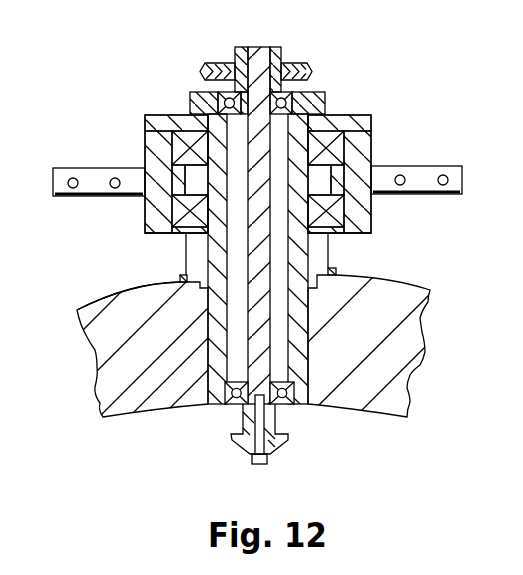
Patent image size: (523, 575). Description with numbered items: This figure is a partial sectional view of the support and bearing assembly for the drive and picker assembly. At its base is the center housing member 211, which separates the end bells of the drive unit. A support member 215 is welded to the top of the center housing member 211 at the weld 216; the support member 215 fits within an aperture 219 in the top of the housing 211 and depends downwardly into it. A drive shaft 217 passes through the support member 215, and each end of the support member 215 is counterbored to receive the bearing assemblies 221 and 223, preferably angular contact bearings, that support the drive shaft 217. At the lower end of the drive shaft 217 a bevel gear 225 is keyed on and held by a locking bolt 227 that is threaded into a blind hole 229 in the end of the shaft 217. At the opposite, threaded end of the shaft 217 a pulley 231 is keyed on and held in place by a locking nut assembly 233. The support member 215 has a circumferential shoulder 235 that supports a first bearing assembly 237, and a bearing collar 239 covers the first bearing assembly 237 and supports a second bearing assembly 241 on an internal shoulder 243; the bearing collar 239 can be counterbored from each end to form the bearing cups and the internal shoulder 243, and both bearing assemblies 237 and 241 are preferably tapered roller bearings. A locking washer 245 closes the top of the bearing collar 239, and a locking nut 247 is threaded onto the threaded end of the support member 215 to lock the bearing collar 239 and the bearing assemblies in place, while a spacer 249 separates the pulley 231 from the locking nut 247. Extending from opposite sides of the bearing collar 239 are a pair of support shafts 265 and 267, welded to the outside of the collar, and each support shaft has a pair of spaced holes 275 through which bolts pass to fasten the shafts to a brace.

The center housing member 211 is at (407, 283).
The support member 215 is at (301, 322).
The weld 216 is at (179, 277).
The drive shaft 217 is at (260, 318).
The aperture 219 is at (155, 302).
The bearing assembly 221 is at (293, 406).
The bearing assembly 223 is at (326, 108).
The bevel gear 225 is at (283, 441).
The locking bolt 227 is at (261, 465).
The blind hole 229 is at (247, 409).
The pulley 231 is at (314, 71).
The locking nut assembly 233 is at (281, 55).
The circumferential shoulder 235 is at (329, 236).
The first bearing assembly 237 is at (340, 219).
The bearing collar 239 is at (153, 229).
The second bearing assembly 241 is at (340, 154).
The internal shoulder 243 is at (185, 181).
The locking washer 245 is at (145, 124).
The locking nut 247 is at (190, 101).
The spacer 249 is at (290, 97).
The support shaft 265 is at (102, 176).
The support shaft 267 is at (457, 168).
The spaced holes 275 is at (78, 188).